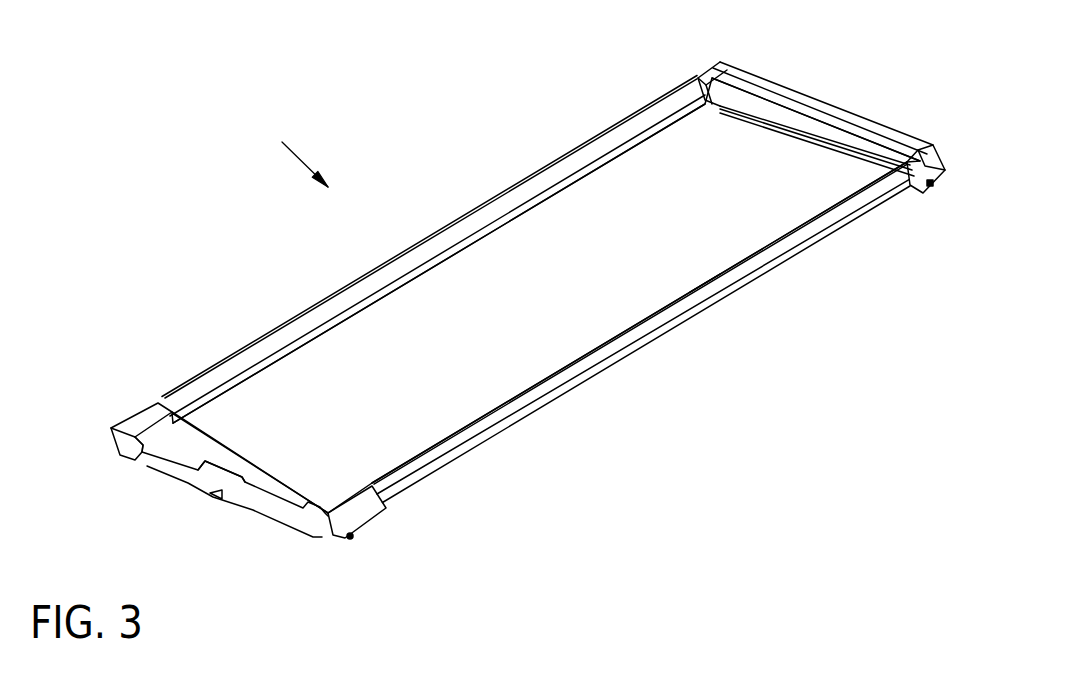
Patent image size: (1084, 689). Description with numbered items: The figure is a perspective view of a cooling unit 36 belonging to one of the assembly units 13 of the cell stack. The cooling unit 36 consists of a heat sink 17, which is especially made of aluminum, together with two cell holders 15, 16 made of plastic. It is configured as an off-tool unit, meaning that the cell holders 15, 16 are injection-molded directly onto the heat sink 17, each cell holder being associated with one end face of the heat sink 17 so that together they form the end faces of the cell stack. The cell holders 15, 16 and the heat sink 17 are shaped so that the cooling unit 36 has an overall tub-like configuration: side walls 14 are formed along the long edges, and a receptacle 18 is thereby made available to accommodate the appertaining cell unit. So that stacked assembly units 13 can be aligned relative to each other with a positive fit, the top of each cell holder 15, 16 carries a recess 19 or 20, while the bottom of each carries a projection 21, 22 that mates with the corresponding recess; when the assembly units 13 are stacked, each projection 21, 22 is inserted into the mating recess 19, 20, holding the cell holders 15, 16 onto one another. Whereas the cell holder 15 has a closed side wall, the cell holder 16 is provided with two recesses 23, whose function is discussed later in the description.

The assembly unit 13 is at (217, 289).
The side walls 14 is at (537, 185).
The cell holder 15 is at (802, 103).
The cell holder 16 is at (288, 495).
The heat sink 17 is at (547, 355).
The receptacle 18 is at (703, 273).
The recess 19 is at (715, 82).
The recess 20 is at (143, 420).
The projection 21 is at (931, 187).
The projection 22 is at (351, 539).
The recesses 23 is at (181, 490).
The cooling unit 36 is at (286, 146).